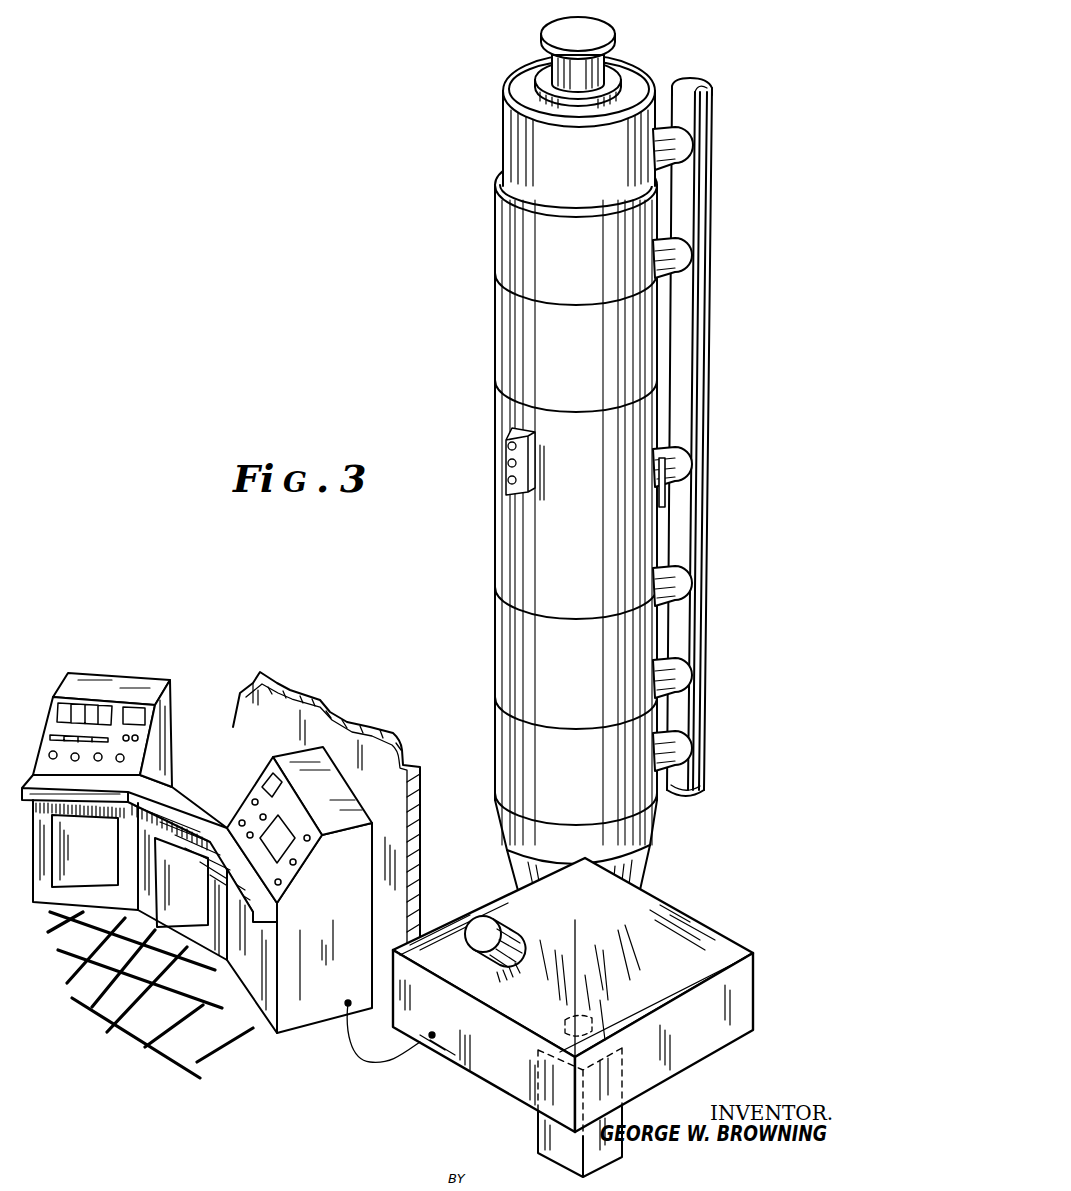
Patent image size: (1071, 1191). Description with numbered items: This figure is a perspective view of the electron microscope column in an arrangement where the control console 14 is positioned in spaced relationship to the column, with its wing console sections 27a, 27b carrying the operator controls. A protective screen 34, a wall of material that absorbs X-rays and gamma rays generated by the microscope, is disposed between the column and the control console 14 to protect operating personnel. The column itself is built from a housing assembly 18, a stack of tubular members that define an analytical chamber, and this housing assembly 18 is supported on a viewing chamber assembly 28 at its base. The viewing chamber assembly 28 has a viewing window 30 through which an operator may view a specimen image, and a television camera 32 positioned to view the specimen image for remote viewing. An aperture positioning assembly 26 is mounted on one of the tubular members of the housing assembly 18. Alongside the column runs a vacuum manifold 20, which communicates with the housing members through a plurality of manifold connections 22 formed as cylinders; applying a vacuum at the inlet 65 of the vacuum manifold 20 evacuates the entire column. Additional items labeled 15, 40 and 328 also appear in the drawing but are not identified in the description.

The control console 14 is at (364, 932).
The control console 15 is at (149, 786).
The housing assembly 18 is at (660, 357).
The vacuum manifold 20 is at (725, 409).
The manifold connections 22 is at (690, 148).
The aperture positioning assembly 26 is at (683, 457).
The wing console section 27a is at (103, 673).
The wing console section 27b is at (364, 813).
The viewing chamber assembly 28 is at (695, 1062).
The viewing window 30 is at (496, 985).
The television camera 32 is at (543, 1140).
The protective screen 34 is at (397, 715).
The cable connection 40 is at (432, 1036).
The inlet 65 is at (705, 84).
The switch 328 is at (288, 843).